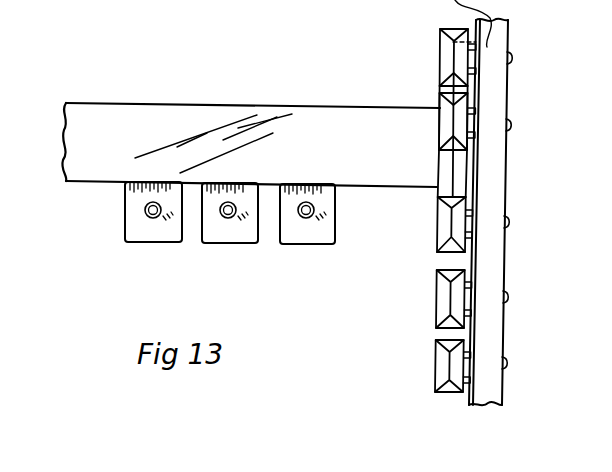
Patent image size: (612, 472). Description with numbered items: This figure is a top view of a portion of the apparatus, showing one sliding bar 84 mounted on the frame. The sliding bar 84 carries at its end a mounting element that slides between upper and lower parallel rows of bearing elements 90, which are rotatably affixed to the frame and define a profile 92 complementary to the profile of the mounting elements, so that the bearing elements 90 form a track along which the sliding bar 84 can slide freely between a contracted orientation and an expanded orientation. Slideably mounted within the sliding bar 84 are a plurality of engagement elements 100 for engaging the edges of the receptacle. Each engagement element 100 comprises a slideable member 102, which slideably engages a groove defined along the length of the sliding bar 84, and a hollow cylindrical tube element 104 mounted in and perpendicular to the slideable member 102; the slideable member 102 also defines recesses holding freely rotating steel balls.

The sliding bar 84 is at (104, 167).
The bearing elements 90 is at (438, 100).
The profile 92 is at (443, 392).
The engagement element 100 is at (287, 238).
The slideable member 102 is at (338, 229).
The cylindrical tube element 104 is at (150, 212).